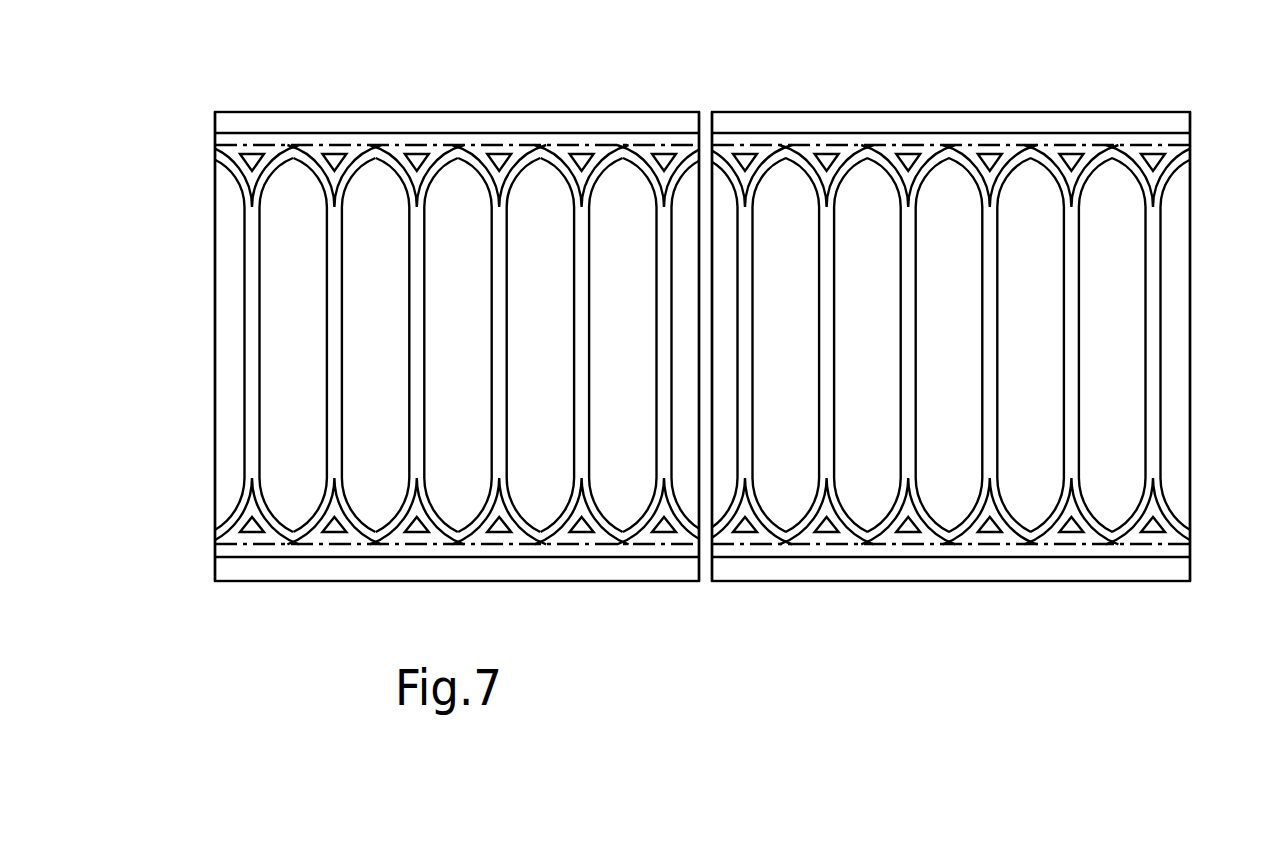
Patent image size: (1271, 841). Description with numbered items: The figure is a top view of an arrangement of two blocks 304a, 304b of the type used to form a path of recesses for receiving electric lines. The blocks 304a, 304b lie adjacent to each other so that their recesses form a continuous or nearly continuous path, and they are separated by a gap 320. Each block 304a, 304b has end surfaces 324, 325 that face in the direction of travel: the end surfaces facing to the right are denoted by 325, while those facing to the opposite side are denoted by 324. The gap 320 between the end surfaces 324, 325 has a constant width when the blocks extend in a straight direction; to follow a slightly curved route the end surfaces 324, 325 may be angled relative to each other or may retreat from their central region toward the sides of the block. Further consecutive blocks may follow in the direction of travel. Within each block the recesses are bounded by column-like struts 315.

The block 304a is at (418, 112).
The block 304b is at (870, 113).
The strut 315 is at (260, 310).
The gap 320 is at (703, 338).
The end surface 324 is at (215, 255).
The end surface 325 is at (713, 200).